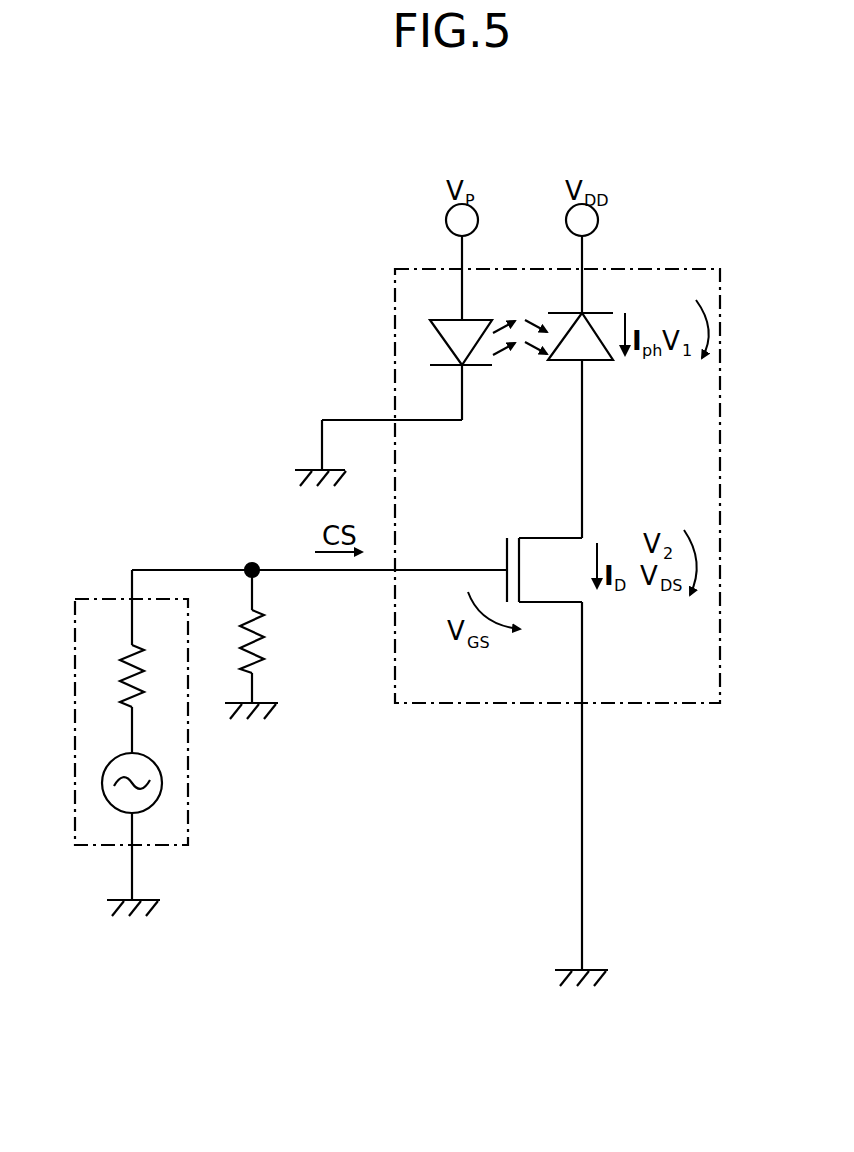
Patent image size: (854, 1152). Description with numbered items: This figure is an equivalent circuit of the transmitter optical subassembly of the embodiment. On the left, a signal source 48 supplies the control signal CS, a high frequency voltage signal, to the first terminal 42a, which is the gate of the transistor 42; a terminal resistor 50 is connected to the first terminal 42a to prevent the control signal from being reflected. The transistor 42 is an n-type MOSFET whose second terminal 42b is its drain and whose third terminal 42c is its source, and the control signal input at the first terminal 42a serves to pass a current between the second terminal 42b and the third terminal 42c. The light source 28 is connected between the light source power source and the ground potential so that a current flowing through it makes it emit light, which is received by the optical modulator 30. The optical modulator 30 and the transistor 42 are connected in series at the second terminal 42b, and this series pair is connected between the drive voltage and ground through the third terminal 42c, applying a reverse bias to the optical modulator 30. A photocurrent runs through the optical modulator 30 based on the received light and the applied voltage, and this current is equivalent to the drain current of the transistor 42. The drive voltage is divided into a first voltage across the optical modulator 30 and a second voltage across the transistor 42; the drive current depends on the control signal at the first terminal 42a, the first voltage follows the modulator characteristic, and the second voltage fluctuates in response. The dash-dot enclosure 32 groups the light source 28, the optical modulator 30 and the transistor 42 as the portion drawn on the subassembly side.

The light source 28 is at (442, 352).
The optical modulator 30 is at (585, 310).
The phototransistor / photodetector unit 32 is at (692, 264).
The transistor 42 is at (545, 525).
The first terminal 42a is at (445, 568).
The second terminal 42b is at (582, 460).
The third terminal 42c is at (582, 657).
The signal source 48 is at (103, 598).
The terminal resistor 50 is at (262, 645).